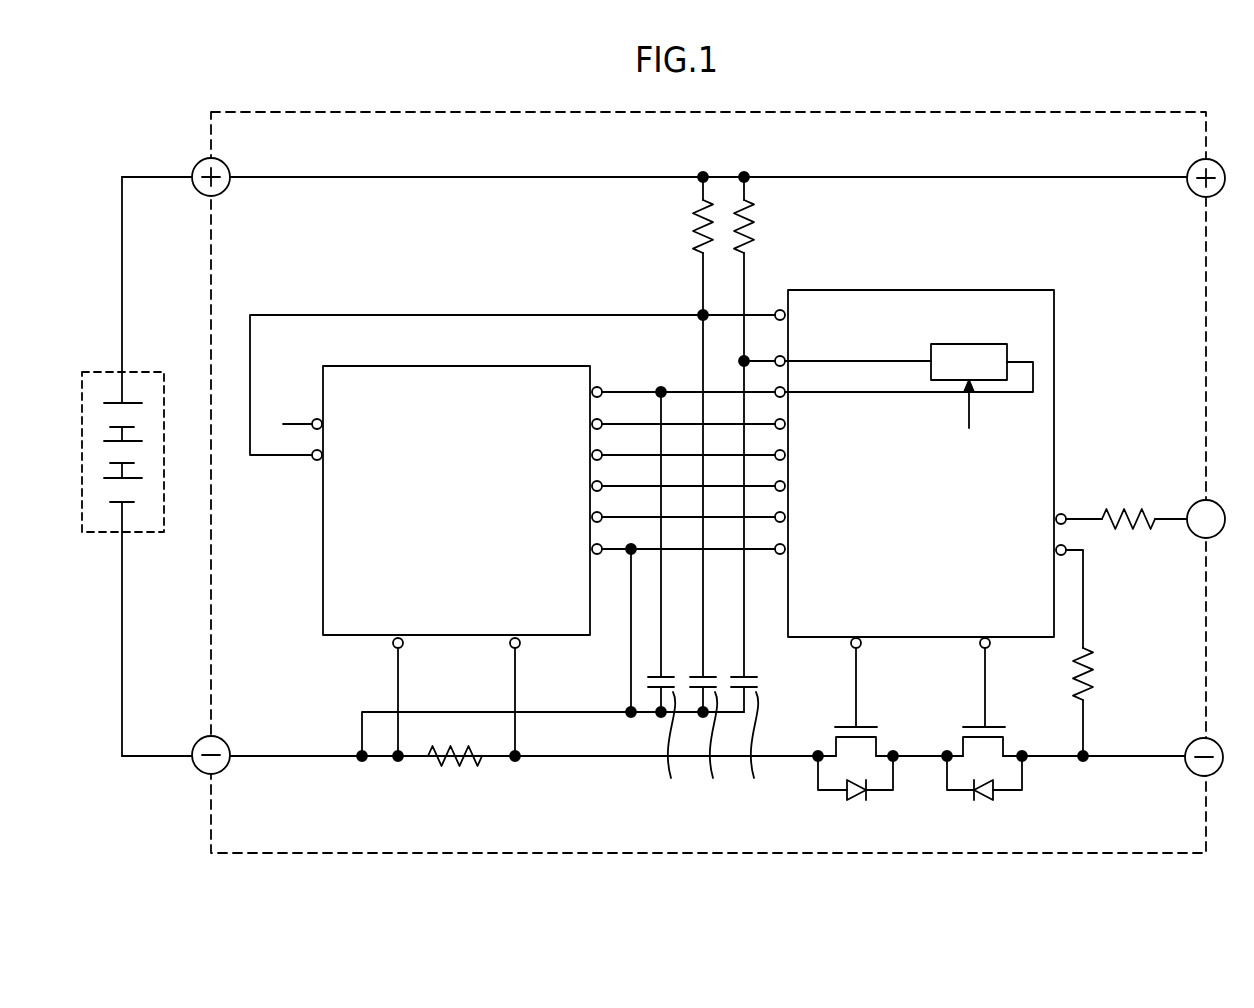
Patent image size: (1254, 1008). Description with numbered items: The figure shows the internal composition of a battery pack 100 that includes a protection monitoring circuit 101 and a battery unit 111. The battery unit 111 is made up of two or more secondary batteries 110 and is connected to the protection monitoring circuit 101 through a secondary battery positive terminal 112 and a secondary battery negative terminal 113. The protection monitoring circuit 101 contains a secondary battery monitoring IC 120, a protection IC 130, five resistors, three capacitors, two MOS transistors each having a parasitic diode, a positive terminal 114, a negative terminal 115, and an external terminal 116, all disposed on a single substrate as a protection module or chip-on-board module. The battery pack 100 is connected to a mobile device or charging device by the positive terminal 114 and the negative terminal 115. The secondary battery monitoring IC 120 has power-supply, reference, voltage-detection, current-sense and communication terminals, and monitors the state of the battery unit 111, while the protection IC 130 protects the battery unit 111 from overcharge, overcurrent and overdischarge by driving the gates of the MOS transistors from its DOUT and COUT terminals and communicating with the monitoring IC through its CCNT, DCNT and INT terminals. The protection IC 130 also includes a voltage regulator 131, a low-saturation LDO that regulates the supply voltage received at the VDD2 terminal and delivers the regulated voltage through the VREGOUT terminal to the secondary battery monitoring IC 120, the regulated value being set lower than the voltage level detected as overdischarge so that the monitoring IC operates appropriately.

The battery pack 100 is at (1241, 75).
The protection monitoring circuit 101 is at (1065, 110).
The secondary battery 110 is at (128, 403).
The battery unit 111 is at (140, 533).
The secondary battery positive terminal 112 is at (225, 165).
The secondary battery negative terminal 113 is at (226, 742).
The positive terminal 114 is at (1218, 165).
The negative terminal 115 is at (1216, 745).
The external terminal 116 is at (1218, 505).
The secondary battery monitoring IC 120 is at (592, 368).
The protection IC 130 is at (920, 448).
The voltage regulator 131 is at (985, 344).